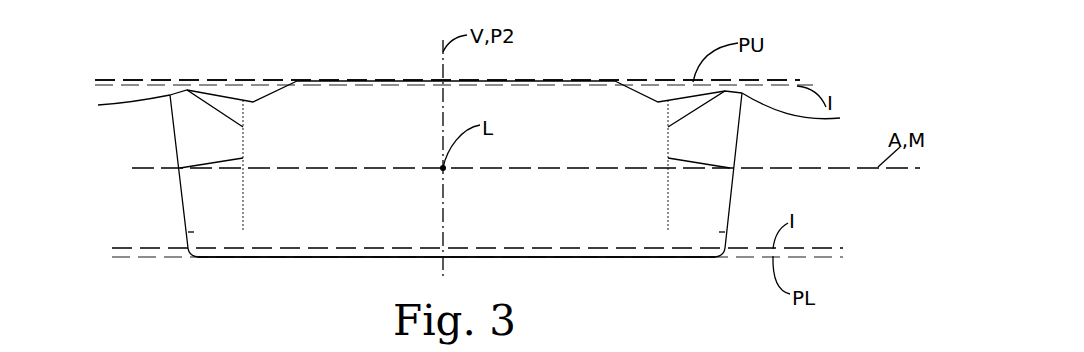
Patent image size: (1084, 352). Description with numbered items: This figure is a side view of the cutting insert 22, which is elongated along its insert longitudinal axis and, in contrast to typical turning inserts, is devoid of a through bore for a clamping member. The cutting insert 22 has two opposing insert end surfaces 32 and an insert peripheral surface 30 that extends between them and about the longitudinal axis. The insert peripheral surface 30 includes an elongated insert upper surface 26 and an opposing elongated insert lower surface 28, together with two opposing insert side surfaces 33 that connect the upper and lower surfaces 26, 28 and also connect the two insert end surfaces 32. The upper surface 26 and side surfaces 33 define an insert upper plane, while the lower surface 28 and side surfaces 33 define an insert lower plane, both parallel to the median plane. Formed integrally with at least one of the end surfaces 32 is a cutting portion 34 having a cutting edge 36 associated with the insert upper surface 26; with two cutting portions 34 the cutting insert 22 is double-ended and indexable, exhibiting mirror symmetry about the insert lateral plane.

The cutting insert 22 is at (248, 37).
The insert upper surface 26 is at (347, 78).
The insert lower surface 28 is at (553, 258).
The insert peripheral surface 30 is at (535, 128).
The insert end surface 32 is at (175, 127).
The insert side surface 33 is at (325, 148).
The cutting portion 34 is at (157, 70).
The cutting edge 36 is at (475, 113).